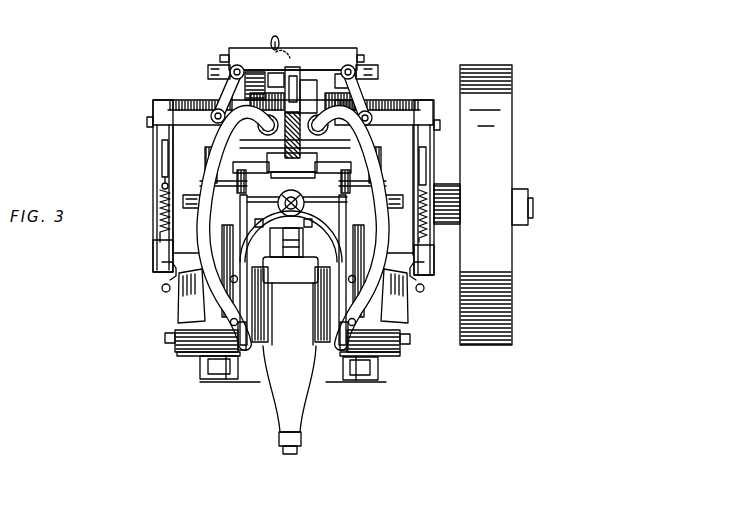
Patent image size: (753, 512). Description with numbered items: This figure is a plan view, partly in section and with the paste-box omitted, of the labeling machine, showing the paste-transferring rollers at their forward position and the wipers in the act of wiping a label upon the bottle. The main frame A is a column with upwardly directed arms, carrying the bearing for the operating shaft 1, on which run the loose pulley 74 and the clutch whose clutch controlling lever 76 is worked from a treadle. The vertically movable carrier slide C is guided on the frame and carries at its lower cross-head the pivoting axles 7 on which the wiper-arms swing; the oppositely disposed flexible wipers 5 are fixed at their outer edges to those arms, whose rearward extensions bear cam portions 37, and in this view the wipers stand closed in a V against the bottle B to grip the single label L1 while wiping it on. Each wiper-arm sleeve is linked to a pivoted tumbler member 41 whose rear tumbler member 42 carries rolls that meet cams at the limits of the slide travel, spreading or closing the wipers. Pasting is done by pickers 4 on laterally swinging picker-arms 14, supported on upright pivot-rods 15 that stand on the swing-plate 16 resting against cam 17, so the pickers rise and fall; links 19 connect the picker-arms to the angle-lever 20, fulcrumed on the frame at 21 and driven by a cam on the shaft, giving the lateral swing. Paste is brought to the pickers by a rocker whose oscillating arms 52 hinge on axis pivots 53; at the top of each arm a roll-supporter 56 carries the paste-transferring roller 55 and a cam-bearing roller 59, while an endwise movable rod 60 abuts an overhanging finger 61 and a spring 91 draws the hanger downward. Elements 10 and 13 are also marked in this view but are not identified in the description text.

The operating shaft 1 is at (533, 208).
The pickers 4 is at (190, 312).
The wipers 5 is at (258, 308).
The pivoting axles 7 is at (220, 384).
The lower block 10 is at (210, 382).
The clamp block 13 is at (208, 376).
The picker-arms 14 is at (202, 222).
The pivot-rods 15 is at (232, 68).
The swing-plate 16 is at (312, 100).
The cam 17 is at (332, 122).
The links 19 is at (230, 101).
The angle-lever 20 is at (274, 36).
The fulcrum 21 is at (208, 71).
The cam portions 37 is at (340, 250).
The tumbler member 41 is at (268, 222).
The rear tumbler member 42 is at (240, 168).
The oscillating arms 52 is at (153, 252).
The axis pivots 53 is at (147, 122).
The paste-transferring roller 55 is at (180, 352).
The roll-supporter 56 is at (164, 268).
The cam-bearing roller 59 is at (243, 384).
The endwise movable rod 60 is at (153, 162).
The overhanging finger 61 is at (162, 288).
The loose running pulley 74 is at (504, 254).
The clutch controlling lever 76 is at (442, 198).
The spring 91 is at (156, 208).
The main frame A is at (291, 108).
The bottle B is at (289, 412).
The carrier slide C is at (236, 194).
The single label L1 is at (290, 286).